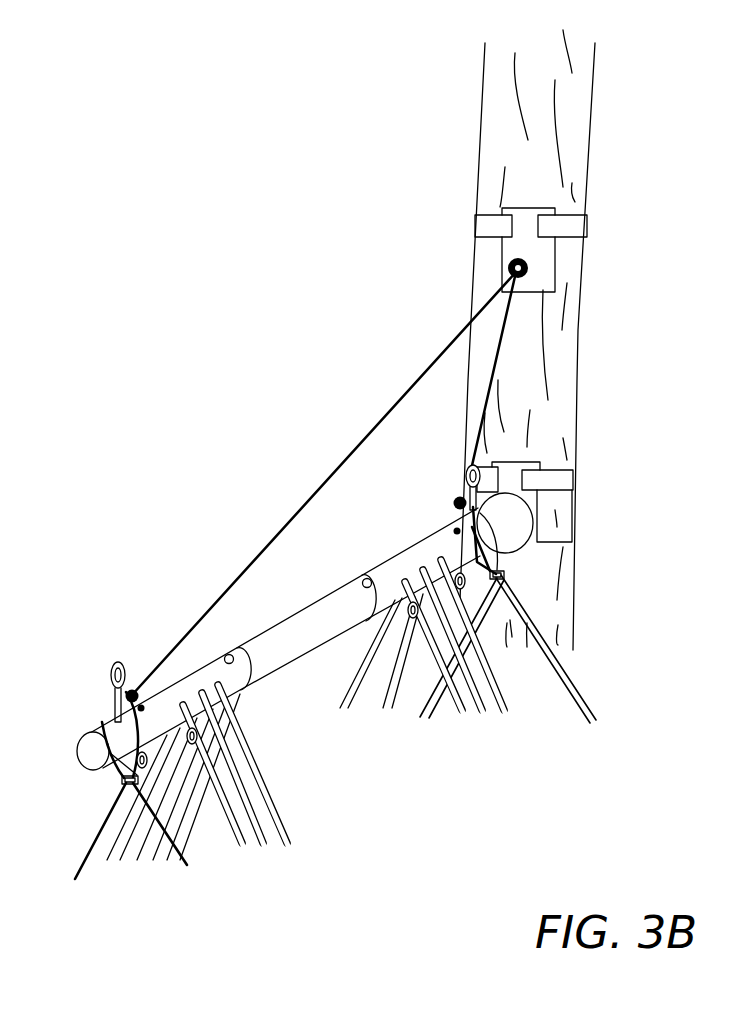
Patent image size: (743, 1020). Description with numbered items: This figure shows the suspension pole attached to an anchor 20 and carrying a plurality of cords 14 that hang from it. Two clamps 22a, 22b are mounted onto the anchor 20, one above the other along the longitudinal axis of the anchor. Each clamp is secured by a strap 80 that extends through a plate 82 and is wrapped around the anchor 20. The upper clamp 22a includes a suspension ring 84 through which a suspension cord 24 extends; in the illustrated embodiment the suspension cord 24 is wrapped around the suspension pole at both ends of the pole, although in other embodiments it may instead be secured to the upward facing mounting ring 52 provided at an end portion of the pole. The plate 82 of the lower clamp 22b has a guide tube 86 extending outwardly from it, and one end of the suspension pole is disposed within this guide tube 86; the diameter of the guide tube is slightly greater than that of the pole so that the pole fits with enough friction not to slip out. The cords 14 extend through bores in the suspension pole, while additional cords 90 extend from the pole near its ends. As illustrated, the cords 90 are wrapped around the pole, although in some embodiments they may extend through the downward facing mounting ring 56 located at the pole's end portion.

The anchor 20 is at (573, 113).
The clamp 22a is at (580, 224).
The clamp 22b is at (573, 468).
The strap 80 is at (580, 226).
The plate 82 is at (547, 257).
The suspension ring 84 is at (567, 290).
The mounting ring 52 is at (112, 663).
The suspension cord 24 is at (303, 502).
The mounting ring 56 is at (113, 773).
The guide tube 86 is at (505, 546).
The additional cords 90 is at (187, 863).
The cords 14 is at (107, 860).